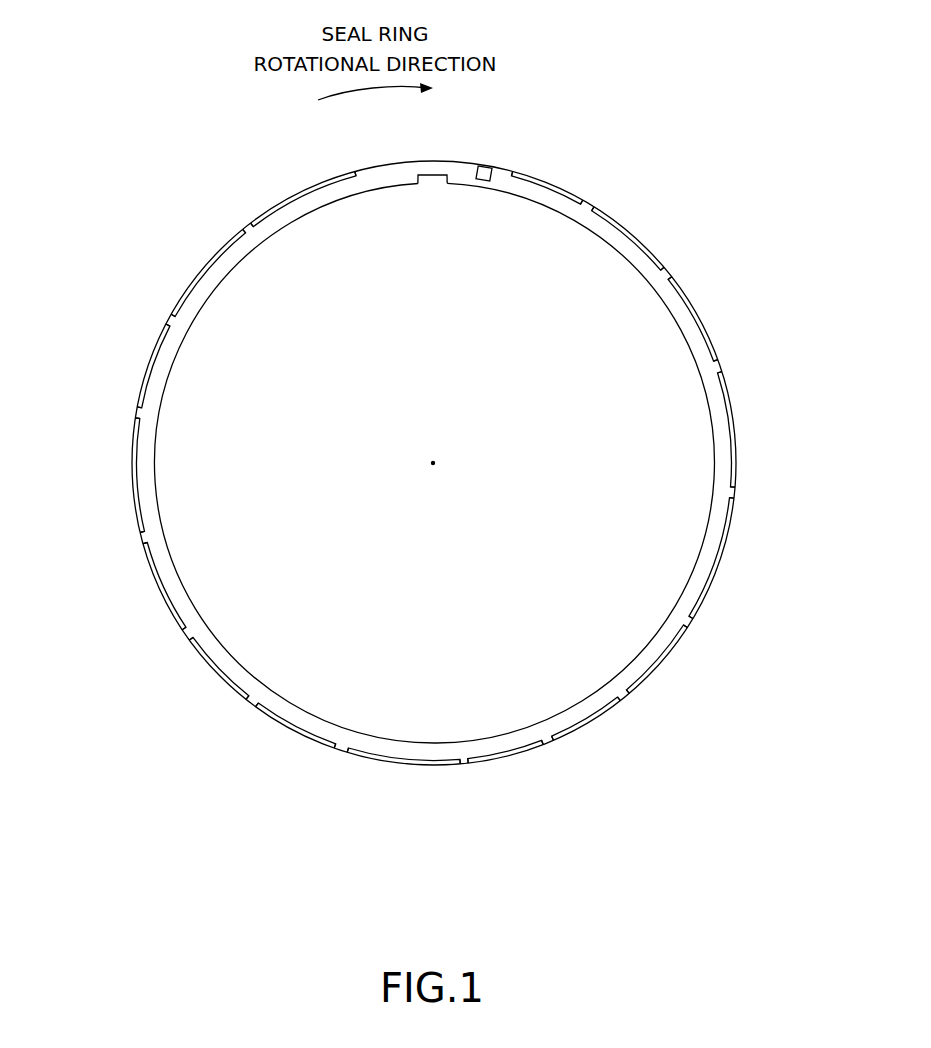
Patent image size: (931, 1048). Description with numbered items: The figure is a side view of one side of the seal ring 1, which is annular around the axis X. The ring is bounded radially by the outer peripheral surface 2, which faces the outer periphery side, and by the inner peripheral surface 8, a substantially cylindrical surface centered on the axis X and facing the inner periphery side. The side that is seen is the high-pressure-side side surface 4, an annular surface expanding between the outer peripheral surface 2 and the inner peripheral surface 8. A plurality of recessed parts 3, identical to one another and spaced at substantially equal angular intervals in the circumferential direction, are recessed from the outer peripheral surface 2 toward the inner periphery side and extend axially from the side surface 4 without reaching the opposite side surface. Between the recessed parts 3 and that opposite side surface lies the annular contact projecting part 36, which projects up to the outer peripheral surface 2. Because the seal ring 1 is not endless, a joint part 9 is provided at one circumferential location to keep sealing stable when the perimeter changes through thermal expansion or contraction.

The seal ring 1 is at (606, 122).
The outer peripheral surface 2 is at (237, 221).
The recessed parts 3 is at (548, 185).
The high-pressure-side side surface 4 is at (328, 200).
The inner peripheral surface 8 is at (188, 567).
The joint part 9 is at (482, 174).
The contact projecting part 36 is at (589, 204).
The axis X is at (440, 465).